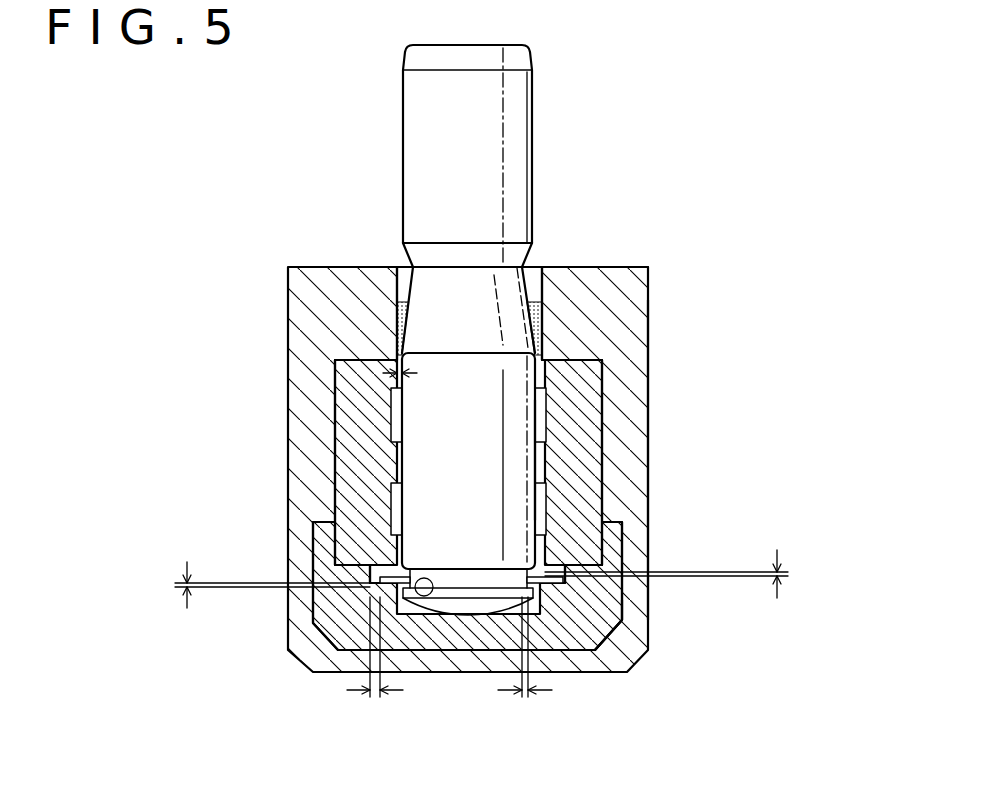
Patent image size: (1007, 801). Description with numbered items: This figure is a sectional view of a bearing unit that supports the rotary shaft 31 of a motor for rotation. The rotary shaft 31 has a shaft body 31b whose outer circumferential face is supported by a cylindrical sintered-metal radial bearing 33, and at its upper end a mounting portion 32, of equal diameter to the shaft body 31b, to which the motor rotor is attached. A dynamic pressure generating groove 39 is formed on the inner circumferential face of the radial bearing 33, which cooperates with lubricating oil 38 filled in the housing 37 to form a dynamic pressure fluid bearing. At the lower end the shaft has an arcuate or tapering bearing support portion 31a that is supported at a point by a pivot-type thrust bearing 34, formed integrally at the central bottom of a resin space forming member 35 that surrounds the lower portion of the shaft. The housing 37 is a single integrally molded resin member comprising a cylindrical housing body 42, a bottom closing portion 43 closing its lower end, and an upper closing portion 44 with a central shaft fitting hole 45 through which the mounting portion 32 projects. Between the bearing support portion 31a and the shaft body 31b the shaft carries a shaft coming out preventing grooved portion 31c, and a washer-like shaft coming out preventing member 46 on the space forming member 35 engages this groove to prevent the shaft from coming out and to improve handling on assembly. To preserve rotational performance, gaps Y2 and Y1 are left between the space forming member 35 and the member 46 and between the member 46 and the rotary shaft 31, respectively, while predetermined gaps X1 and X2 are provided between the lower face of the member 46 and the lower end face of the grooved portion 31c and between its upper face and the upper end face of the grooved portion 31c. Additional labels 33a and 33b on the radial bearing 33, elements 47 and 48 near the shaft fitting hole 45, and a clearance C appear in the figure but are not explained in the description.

The rotary shaft 31 is at (517, 515).
The bearing support portion 31a is at (455, 606).
The shaft body 31b is at (513, 472).
The shaft coming out preventing grooved portion 31c is at (378, 598).
The mounting portion 32 is at (515, 90).
The radial bearing 33 is at (348, 463).
The lower end of housing 33a is at (370, 577).
The upper end of housing 33b is at (367, 358).
The thrust bearing 34 is at (475, 650).
The space forming member 35 is at (603, 647).
The housing 37 is at (640, 453).
The lubricating oil 38 is at (542, 306).
The dynamic pressure generating groove 39 is at (395, 412).
The housing body 42 is at (640, 376).
The bottom closing portion 43 is at (597, 660).
The upper closing portion 44 is at (622, 277).
The shaft fitting hole 45 is at (402, 262).
The shaft coming out preventing member 46 is at (572, 580).
The first seal 47 is at (407, 272).
The bore wall 48 is at (507, 270).
The clearance C is at (414, 379).
The predetermined gap X1 is at (255, 585).
The predetermined gap X2 is at (683, 574).
The gap Y1 is at (525, 666).
The gap Y2 is at (375, 666).